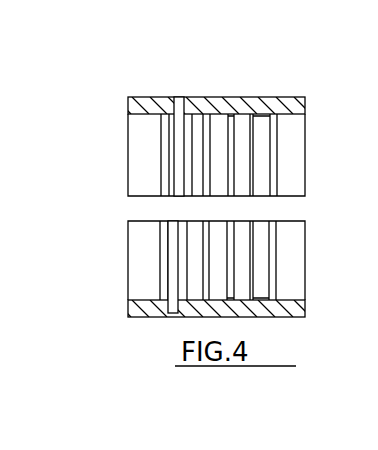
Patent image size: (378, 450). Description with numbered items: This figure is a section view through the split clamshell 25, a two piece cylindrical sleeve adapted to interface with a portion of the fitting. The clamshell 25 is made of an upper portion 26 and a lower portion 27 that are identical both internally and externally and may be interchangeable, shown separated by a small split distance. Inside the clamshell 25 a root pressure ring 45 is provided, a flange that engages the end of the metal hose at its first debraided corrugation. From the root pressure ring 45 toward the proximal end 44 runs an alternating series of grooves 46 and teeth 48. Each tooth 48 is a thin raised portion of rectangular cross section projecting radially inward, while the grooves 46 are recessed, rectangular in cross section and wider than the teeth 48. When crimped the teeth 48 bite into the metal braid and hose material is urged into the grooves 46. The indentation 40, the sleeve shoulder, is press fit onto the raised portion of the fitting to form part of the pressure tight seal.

The split clamshell 25 is at (128, 153).
The upper portion 26 is at (153, 97).
The lower portion 27 is at (292, 318).
The indentation 40 is at (152, 318).
The proximal end 44 is at (305, 150).
The root pressure ring 45 is at (185, 133).
The grooves 46 is at (230, 97).
The teeth 48 is at (248, 97).